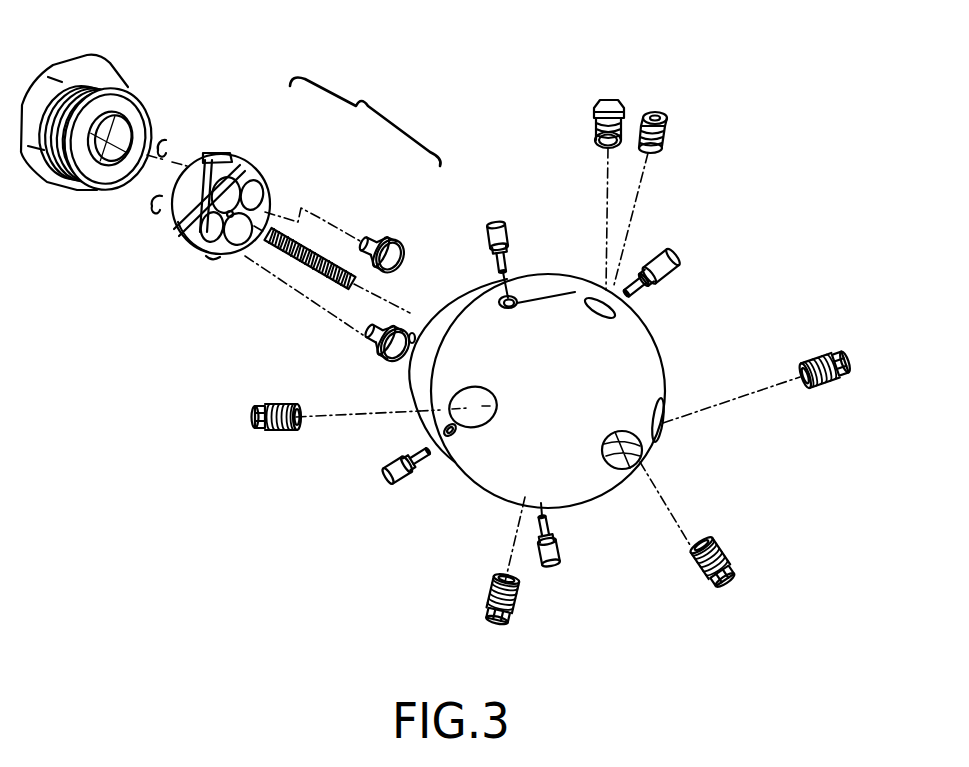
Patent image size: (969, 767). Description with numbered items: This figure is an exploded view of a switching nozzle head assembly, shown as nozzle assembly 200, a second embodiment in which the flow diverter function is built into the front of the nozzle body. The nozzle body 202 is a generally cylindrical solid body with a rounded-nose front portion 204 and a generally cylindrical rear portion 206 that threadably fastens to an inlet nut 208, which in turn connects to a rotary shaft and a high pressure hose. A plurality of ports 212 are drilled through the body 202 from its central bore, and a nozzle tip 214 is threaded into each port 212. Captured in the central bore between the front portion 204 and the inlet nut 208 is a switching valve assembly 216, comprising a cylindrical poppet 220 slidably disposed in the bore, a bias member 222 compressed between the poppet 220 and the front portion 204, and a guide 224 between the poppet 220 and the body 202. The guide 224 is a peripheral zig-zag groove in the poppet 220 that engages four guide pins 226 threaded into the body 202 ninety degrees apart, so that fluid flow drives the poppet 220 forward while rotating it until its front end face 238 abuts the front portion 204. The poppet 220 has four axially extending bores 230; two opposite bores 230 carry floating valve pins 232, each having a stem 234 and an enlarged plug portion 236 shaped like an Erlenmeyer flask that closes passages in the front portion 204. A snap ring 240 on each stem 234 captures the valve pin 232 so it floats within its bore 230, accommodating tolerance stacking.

The nozzle assembly 200 is at (752, 110).
The nozzle body 202 is at (646, 332).
The front portion 204 is at (654, 374).
The rear portion 206 is at (478, 470).
The inlet nut 208 is at (136, 92).
The ports 212 is at (612, 312).
The nozzle tip 214 is at (660, 108).
The switching valve assembly 216 is at (365, 115).
The poppet 220 is at (276, 166).
The bias member 222 is at (313, 272).
The guide 224 is at (210, 158).
The guide pins 226 is at (492, 222).
The axially extending bores 230 is at (240, 180).
The valve pins 232 is at (382, 242).
The stem 234 is at (372, 342).
The enlarged plug portion 236 is at (410, 332).
The front end face 238 is at (212, 262).
The snap ring 240 is at (162, 138).